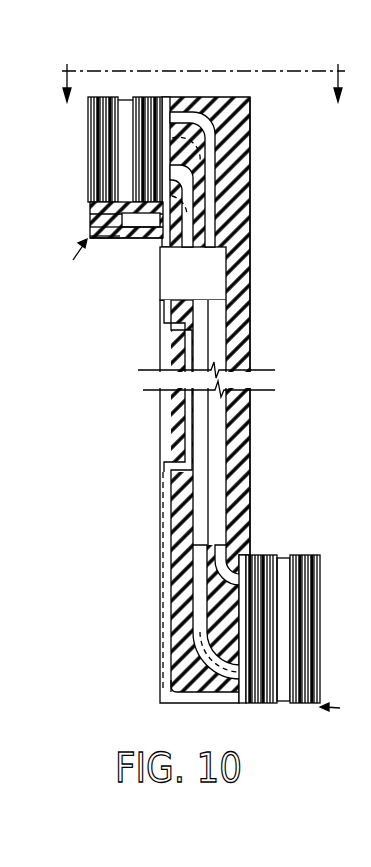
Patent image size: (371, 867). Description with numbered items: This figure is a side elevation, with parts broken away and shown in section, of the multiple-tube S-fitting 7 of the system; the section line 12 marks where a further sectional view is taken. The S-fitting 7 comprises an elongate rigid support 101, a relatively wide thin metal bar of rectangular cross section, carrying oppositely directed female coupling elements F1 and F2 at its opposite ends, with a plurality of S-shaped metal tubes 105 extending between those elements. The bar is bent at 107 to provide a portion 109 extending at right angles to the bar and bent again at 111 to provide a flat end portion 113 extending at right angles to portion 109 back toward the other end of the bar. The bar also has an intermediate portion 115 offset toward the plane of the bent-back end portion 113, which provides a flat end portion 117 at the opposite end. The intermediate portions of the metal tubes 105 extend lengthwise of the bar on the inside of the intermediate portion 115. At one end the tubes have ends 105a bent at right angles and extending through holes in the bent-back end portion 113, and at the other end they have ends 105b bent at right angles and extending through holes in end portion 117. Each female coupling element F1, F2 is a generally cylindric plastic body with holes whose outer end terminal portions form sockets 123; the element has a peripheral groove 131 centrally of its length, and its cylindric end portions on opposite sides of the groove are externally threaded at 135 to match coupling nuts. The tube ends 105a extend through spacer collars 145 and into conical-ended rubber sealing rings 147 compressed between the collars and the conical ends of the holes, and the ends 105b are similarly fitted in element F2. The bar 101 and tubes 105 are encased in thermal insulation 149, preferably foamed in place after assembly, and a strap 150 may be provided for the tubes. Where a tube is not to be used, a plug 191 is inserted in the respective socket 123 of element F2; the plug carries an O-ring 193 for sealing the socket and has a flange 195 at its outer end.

The S-fitting 7 is at (252, 203).
The section line 12- 12 is at (202, 72).
The support 101 is at (172, 500).
The metal tubes 105 is at (218, 440).
The tube ends 105a is at (168, 687).
The tube ends 105b is at (185, 112).
The bend 107 is at (168, 703).
The portion 109 is at (205, 700).
The bend 111 is at (245, 703).
The flat end portion 113 is at (243, 552).
The intermediate portion 115 is at (193, 418).
The flat end portion 117 is at (174, 83).
The socket 123 is at (118, 240).
The peripheral groove 131 is at (287, 705).
The external threading 135 is at (141, 97).
The spacer collars 145 is at (133, 243).
The sealing rings 147 is at (132, 243).
The thermal insulation 149 is at (253, 348).
The strap 150 is at (218, 272).
The plug 191 is at (92, 206).
The O-ring 193 is at (93, 220).
The flange 195 is at (92, 228).
The female coupling element F1 is at (339, 710).
The female coupling element F2 is at (72, 260).